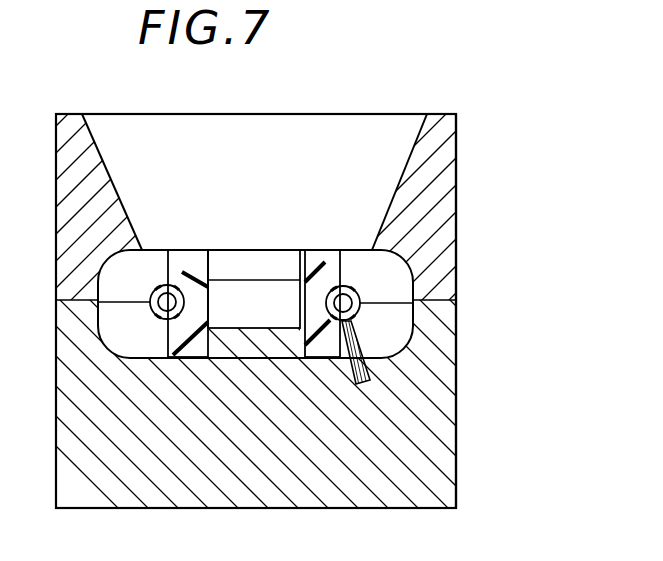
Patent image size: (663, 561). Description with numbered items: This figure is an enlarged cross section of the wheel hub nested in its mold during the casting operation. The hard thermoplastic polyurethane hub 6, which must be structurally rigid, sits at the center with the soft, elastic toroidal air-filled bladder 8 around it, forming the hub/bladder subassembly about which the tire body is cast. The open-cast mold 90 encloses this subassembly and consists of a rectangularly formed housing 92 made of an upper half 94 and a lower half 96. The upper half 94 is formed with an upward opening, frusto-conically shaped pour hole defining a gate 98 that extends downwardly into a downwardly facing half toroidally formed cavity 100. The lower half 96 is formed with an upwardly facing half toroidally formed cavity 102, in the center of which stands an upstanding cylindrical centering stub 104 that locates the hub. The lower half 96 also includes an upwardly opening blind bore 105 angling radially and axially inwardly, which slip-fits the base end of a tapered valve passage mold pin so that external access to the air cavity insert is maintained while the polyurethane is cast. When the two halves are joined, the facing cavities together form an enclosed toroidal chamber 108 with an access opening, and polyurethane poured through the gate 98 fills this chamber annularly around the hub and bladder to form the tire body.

The hub 6 is at (340, 246).
The bladder 8 is at (364, 290).
The open-cast mold 90 is at (462, 436).
The housing 92 is at (303, 508).
The upper half 94 is at (456, 148).
The lower half 96 is at (458, 470).
The gate 98 is at (410, 158).
The downwardly facing half toroidally formed cavity 100 is at (106, 270).
The upwardly facing half toroidally formed cavity 102 is at (100, 325).
The centering stub 104 is at (218, 338).
The blind bore 105 is at (370, 381).
The toroidal chamber 108 is at (413, 272).